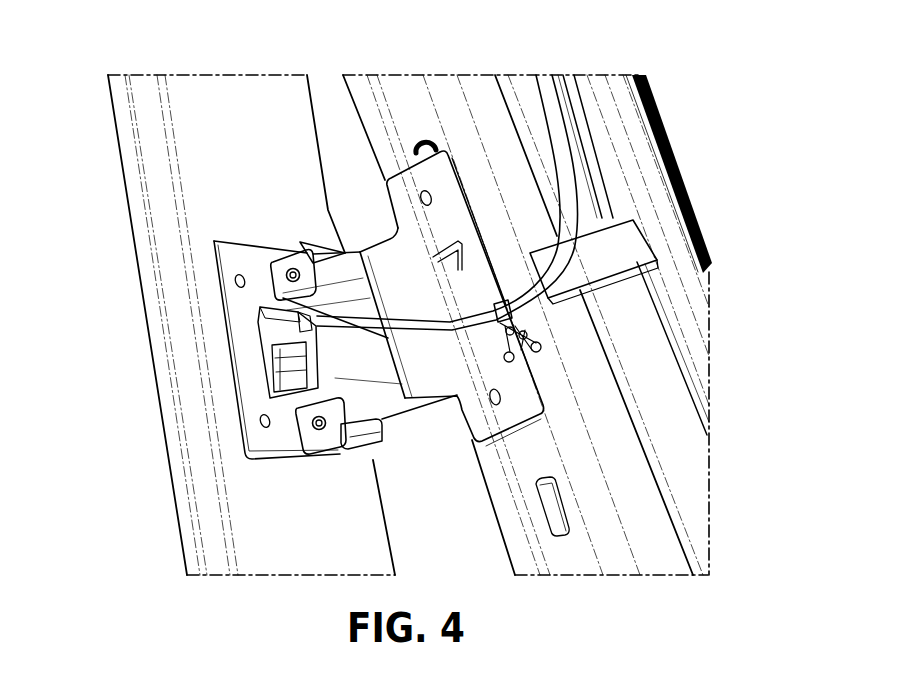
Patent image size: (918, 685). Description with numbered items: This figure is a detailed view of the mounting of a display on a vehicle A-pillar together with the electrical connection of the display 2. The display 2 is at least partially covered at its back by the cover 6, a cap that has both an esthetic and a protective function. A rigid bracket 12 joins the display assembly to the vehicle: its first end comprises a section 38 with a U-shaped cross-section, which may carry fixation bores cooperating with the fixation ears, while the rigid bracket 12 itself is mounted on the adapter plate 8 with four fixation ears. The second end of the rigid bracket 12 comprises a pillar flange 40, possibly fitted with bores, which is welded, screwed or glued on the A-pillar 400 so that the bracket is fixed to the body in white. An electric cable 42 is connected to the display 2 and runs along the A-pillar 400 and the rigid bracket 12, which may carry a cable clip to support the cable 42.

The display 2 is at (160, 190).
The cover 6 is at (277, 545).
The adapter plate 8 is at (245, 352).
The rigid bracket 12 is at (380, 401).
The section with a U-shaped cross-section 38 is at (345, 352).
The pillar flange 40 is at (445, 227).
The electric cable 42 is at (568, 160).
The A-pillar 400 is at (592, 392).